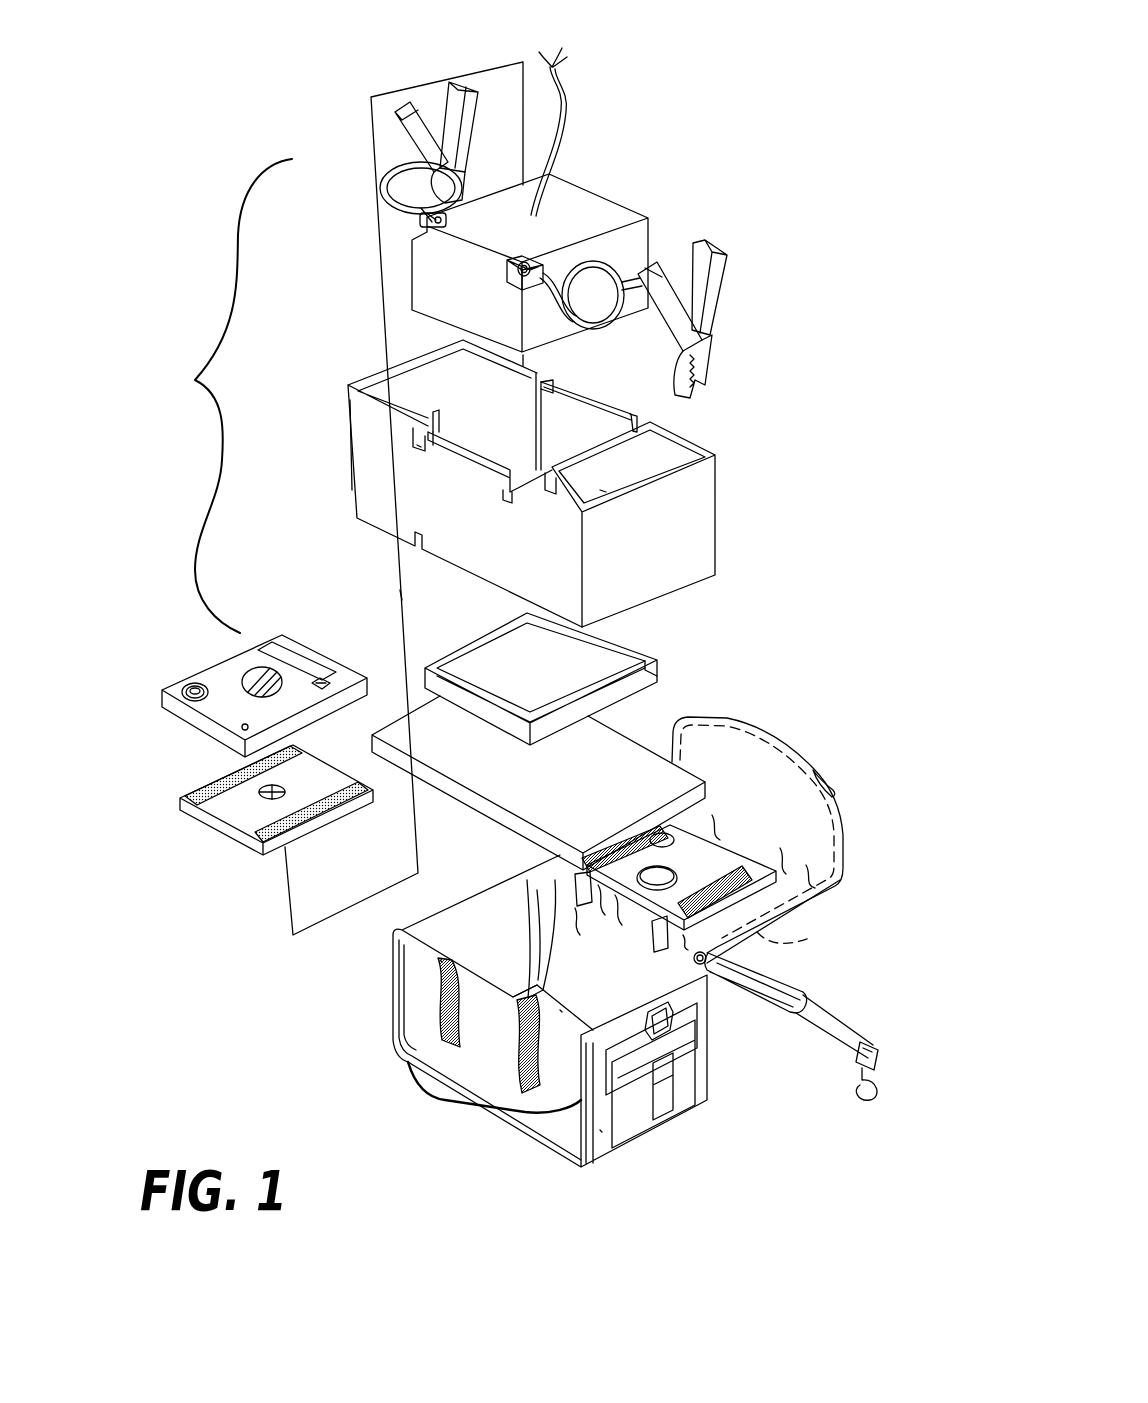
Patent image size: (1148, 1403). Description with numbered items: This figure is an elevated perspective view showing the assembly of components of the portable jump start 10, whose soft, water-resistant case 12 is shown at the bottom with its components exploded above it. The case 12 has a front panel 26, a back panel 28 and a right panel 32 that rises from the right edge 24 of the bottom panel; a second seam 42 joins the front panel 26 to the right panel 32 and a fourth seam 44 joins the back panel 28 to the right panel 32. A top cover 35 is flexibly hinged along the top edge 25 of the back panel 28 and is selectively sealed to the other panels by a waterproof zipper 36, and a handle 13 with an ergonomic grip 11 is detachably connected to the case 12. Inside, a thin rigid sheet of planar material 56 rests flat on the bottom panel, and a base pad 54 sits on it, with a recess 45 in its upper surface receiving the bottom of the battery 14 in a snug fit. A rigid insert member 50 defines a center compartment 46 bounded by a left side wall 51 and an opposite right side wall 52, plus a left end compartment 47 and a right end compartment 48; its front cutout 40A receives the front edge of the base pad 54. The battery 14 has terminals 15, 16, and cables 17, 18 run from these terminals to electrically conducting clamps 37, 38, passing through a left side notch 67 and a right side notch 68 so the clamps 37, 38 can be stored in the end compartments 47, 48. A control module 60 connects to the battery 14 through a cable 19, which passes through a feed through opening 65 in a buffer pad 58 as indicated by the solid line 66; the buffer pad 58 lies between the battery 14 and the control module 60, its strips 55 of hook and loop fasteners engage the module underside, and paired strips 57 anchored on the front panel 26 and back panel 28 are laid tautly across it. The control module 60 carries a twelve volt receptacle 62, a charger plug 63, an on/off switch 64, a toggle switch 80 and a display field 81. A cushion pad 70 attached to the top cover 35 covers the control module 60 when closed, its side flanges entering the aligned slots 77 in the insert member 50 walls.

The portable jump start 10 is at (226, 396).
The grip 11 is at (763, 1003).
The case 12 is at (862, 740).
The handle 13 is at (830, 1047).
The battery 14 is at (620, 188).
The terminal 15 is at (535, 262).
The terminal 16 is at (446, 221).
The cable 17 is at (640, 278).
The cable 18 is at (382, 197).
The cable 19 is at (566, 122).
The right edge 24 is at (513, 996).
The top edge 25 is at (610, 905).
The front panel 26 is at (572, 1131).
The back panel 28 is at (577, 992).
The right panel 32 is at (450, 937).
The top cover 35 is at (748, 740).
The waterproof zipper 36 is at (812, 937).
The clamp 37 is at (710, 302).
The clamp 38 is at (396, 132).
The front cutout 40A is at (505, 577).
The second seam 42 is at (396, 1008).
The fourth seam 44 is at (540, 930).
The recess 45 is at (605, 662).
The center compartment 46 is at (585, 415).
The left end compartment 47 is at (665, 450).
The right end compartment 48 is at (382, 392).
The insert member 50 is at (365, 480).
The left side wall 51 is at (603, 474).
The right side wall 52 is at (490, 449).
The base pad 54 is at (663, 690).
The strips of hook and loop fasteners 55 is at (274, 790).
The rigid sheet of planar material 56 is at (600, 752).
The strips of hook and loop fasteners 57 is at (745, 853).
The buffer pad 58 is at (245, 818).
The control module 60 is at (305, 655).
The 12 Volt receptacle 62 is at (185, 690).
The plug 63 is at (243, 727).
The on/off switch 64 is at (250, 672).
The feed through opening 65 is at (200, 832).
The solid line 66 is at (402, 593).
The left side notch 67 is at (553, 494).
The right side notch 68 is at (440, 410).
The cushion pad 70 is at (681, 877).
The slots 77 is at (545, 382).
The toggle switch 80 is at (330, 684).
The display field 81 is at (265, 645).